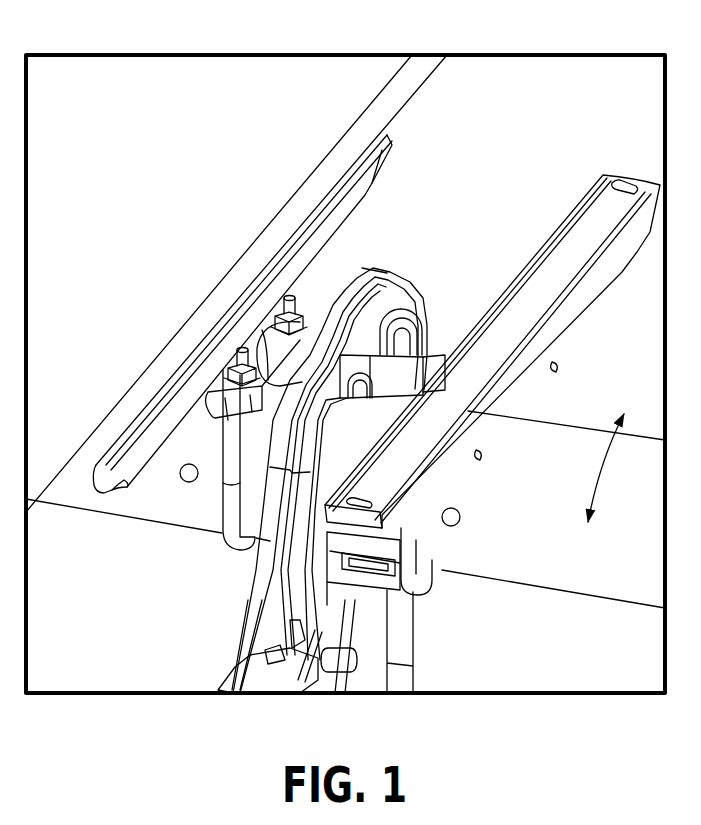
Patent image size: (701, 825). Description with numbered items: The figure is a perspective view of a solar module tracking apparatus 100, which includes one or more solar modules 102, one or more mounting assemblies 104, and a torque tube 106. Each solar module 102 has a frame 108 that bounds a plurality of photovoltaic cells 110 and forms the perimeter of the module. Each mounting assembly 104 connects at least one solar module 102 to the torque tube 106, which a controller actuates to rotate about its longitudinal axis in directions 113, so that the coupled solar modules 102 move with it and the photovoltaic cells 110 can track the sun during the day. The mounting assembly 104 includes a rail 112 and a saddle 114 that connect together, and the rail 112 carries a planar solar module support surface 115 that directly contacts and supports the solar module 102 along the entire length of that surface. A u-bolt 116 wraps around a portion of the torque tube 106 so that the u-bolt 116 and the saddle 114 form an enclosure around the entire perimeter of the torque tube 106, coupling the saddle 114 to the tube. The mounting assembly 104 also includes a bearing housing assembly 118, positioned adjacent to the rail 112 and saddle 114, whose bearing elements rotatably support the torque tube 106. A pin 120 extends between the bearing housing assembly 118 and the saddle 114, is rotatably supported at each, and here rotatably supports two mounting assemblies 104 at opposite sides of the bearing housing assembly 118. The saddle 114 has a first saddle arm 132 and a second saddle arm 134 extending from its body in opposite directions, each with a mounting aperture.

The solar module tracking apparatus 100 is at (509, 83).
The solar module 102 is at (331, 105).
The mounting assembly 104 is at (239, 327).
The torque tube 106 is at (584, 565).
The frame 108 is at (423, 58).
The photovoltaic cells 110 is at (243, 193).
The rail 112 is at (376, 182).
The directions 113 is at (600, 452).
The saddle 114 is at (223, 406).
The solar module support surface 115 is at (132, 426).
The u-bolt 116 is at (216, 510).
The bearing housing assembly 118 is at (393, 258).
The pin 120 is at (403, 366).
The first saddle arm 132 is at (560, 372).
The second saddle arm 134 is at (486, 458).